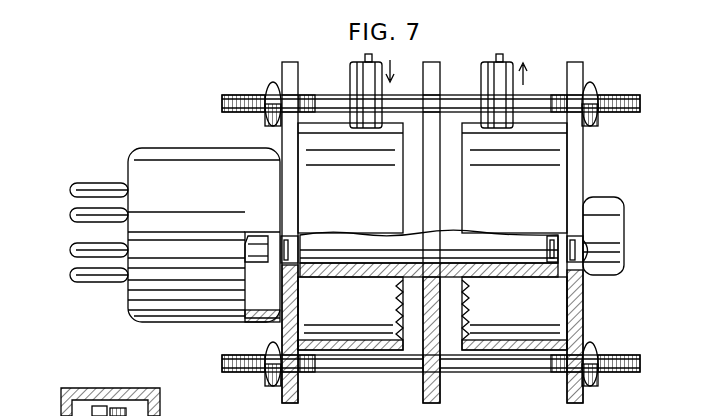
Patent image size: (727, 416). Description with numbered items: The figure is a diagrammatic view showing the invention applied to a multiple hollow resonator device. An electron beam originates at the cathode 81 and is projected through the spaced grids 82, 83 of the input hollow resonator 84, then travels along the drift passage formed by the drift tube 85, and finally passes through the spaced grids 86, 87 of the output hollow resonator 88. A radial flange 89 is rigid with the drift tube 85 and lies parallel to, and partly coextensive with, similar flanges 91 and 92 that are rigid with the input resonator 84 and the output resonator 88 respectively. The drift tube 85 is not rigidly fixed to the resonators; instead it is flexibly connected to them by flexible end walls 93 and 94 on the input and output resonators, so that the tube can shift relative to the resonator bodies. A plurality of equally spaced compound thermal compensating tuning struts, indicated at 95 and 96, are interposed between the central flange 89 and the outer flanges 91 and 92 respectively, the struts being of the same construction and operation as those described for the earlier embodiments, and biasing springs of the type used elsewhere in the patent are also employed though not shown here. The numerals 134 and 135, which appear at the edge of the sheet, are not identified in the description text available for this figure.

The cathode 81 is at (259, 242).
The grid 82 is at (288, 238).
The grid 83 is at (312, 238).
The input hollow resonator 84 is at (352, 301).
The drift tube 85 is at (364, 272).
The grid 86 is at (556, 238).
The grid 87 is at (578, 248).
The output hollow resonator 88 is at (528, 301).
The radial flange 89 is at (431, 392).
The flange 91 is at (290, 398).
The flange 92 is at (578, 398).
The flexible end wall 93 is at (395, 318).
The flexible end wall 94 is at (463, 318).
The compound thermal compensating tuning strut 95 is at (361, 380).
The compound thermal compensating tuning strut 96 is at (506, 380).
The contact element 134 is at (160, 411).
The housing 135 is at (62, 411).